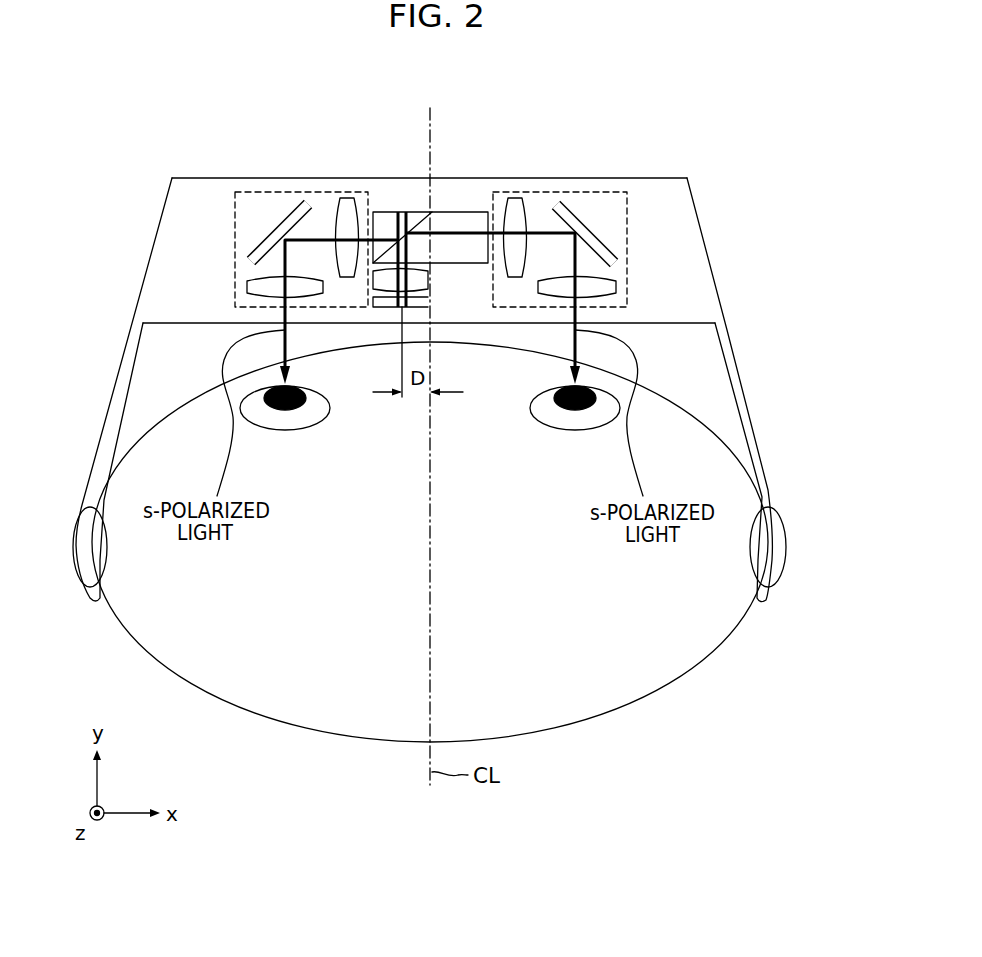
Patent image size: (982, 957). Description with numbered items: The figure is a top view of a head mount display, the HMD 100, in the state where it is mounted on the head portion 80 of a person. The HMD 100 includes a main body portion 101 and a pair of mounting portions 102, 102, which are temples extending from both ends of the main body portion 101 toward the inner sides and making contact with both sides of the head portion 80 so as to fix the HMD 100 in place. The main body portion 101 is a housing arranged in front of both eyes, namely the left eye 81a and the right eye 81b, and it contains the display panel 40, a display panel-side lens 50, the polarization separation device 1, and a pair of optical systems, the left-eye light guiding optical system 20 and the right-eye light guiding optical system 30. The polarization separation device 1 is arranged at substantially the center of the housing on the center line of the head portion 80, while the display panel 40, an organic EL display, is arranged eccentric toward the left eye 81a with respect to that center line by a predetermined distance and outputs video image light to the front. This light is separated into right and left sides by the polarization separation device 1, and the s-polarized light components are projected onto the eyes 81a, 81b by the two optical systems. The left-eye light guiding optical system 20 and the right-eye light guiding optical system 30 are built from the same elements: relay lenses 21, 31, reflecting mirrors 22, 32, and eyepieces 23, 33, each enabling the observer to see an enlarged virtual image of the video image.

The HMD 100 is at (643, 72).
The main body portion 101 is at (187, 178).
The mounting portions 102 is at (100, 467).
The polarization separation device 1 is at (412, 212).
The left-eye light guiding optical system 20 is at (252, 190).
The relay lens 21 is at (343, 198).
The reflecting mirror 22 is at (274, 200).
The eyepiece 23 is at (247, 287).
The right-eye light guiding optical system 30 is at (603, 190).
The relay lens 31 is at (517, 198).
The reflecting mirror 32 is at (575, 198).
The eyepiece 33 is at (616, 287).
The display panel 40 is at (425, 300).
The display panel-side lens 50 is at (425, 278).
The head portion 80 is at (357, 723).
The left eye 81a is at (277, 430).
The right eye 81b is at (573, 430).